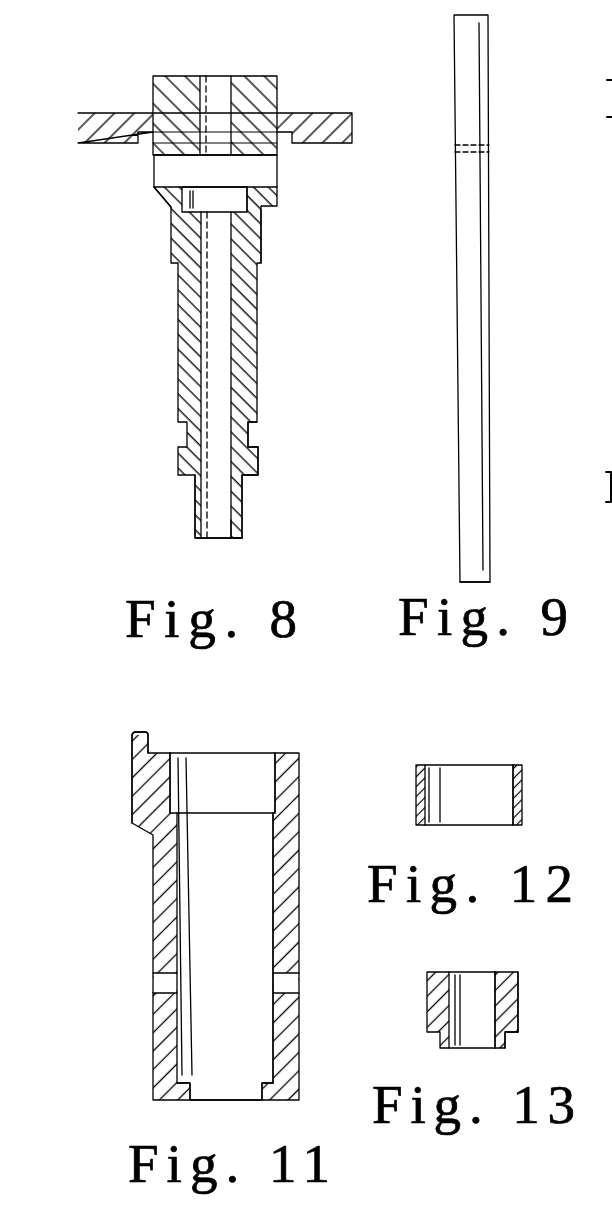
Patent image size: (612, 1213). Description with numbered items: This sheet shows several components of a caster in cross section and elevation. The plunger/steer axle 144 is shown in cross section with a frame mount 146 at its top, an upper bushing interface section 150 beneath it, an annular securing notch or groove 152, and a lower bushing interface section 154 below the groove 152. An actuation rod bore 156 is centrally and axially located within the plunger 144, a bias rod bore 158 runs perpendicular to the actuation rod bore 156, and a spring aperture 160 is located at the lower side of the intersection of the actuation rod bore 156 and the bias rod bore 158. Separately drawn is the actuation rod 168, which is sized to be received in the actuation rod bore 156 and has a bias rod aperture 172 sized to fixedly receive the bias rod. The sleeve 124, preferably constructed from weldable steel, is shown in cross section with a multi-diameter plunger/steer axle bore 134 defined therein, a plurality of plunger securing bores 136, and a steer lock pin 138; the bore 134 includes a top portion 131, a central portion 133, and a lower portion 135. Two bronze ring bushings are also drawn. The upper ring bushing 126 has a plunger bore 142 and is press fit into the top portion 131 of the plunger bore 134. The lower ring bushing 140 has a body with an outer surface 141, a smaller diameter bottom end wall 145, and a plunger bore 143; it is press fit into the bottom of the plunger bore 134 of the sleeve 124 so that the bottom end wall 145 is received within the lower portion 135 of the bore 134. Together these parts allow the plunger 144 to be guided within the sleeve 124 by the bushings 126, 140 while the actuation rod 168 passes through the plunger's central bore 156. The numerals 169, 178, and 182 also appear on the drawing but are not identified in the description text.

In FIG. 8, the frame mount 146 is at (320, 66).
In FIG. 8, the plunger/steer axle 144 is at (130, 353).
In FIG. 8, the bias rod bore 158 is at (162, 189).
In FIG. 8, the spring aperture 160 is at (243, 190).
In FIG. 8, the chamfer 169 is at (160, 198).
In FIG. 8, the upper bushing interface section 150 is at (263, 243).
In FIG. 8, the annular securing notch or groove 152 is at (251, 426).
In FIG. 8, the lower bushing interface section 154 is at (265, 488).
In FIG. 8, the tip 178 is at (175, 539).
In FIG. 8, the actuation rod bore 156 is at (234, 527).
In FIG. 9, the actuation rod 168 is at (518, 398).
In FIG. 9, the bias rod aperture 172 is at (486, 148).
In FIG. 9, the rod end 182 is at (504, 568).
In FIG. 11, the sleeve 124 is at (100, 951).
In FIG. 11, the steer lock pin 138 is at (117, 752).
In FIG. 11, the top portion 131 is at (170, 770).
In FIG. 11, the plunger/steer axle bore 134 is at (268, 802).
In FIG. 11, the central portion 133 is at (272, 872).
In FIG. 11, the plunger securing bores 136 is at (165, 975).
In FIG. 11, the lower portion 135 is at (190, 1087).
In FIG. 12, the upper ring bushing 126 is at (508, 742).
In FIG. 12, the plunger bore 142 is at (513, 815).
In FIG. 13, the lower ring bushing 140 is at (406, 1036).
In FIG. 13, the outer surface 141 is at (519, 985).
In FIG. 13, the bottom end wall 145 is at (507, 1037).
In FIG. 13, the plunger bore 143 is at (494, 1024).